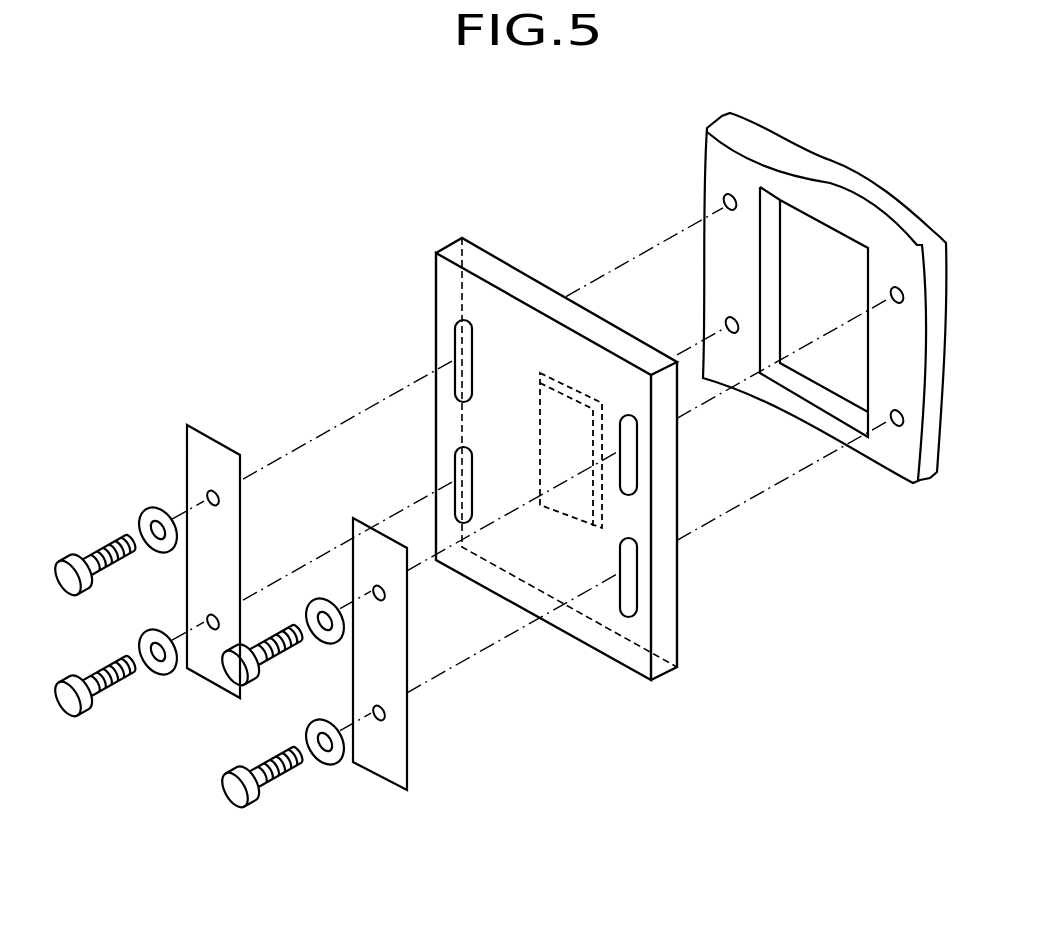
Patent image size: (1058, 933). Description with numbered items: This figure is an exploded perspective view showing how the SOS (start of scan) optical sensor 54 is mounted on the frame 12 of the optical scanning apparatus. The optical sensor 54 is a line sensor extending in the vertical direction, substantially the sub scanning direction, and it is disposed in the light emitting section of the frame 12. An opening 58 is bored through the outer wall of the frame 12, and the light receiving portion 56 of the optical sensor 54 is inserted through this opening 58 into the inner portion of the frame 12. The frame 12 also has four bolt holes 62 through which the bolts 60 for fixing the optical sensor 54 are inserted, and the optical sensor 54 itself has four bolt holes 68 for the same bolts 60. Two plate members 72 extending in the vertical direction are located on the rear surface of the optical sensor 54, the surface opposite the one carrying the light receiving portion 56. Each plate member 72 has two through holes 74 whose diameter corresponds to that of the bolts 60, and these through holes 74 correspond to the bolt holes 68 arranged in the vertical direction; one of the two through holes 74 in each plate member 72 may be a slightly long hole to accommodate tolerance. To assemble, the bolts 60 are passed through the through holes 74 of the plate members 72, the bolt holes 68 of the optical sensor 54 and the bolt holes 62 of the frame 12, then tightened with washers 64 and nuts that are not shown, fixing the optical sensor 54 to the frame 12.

The frame 12 is at (845, 177).
The optical sensor 54 is at (513, 286).
The light receiving portion 56 is at (540, 506).
The opening 58 is at (843, 356).
The bolt 60 is at (62, 570).
The bolt hole 62 is at (722, 201).
The washer 64 is at (165, 668).
The bolt hole 68 is at (455, 350).
The plate member 72 is at (203, 450).
The through hole 74 is at (207, 498).